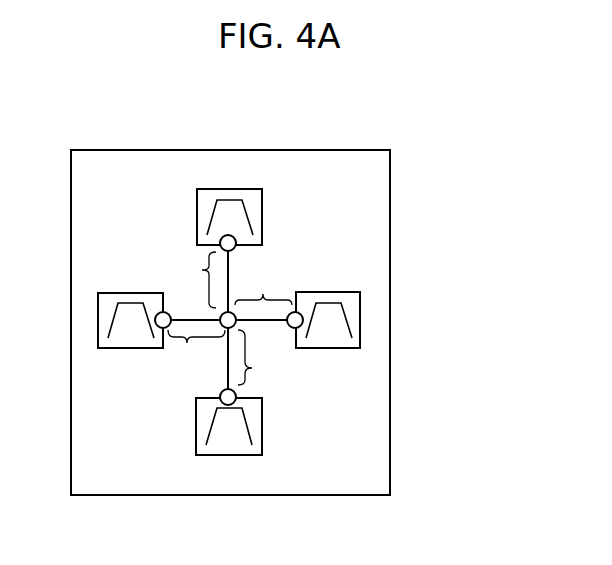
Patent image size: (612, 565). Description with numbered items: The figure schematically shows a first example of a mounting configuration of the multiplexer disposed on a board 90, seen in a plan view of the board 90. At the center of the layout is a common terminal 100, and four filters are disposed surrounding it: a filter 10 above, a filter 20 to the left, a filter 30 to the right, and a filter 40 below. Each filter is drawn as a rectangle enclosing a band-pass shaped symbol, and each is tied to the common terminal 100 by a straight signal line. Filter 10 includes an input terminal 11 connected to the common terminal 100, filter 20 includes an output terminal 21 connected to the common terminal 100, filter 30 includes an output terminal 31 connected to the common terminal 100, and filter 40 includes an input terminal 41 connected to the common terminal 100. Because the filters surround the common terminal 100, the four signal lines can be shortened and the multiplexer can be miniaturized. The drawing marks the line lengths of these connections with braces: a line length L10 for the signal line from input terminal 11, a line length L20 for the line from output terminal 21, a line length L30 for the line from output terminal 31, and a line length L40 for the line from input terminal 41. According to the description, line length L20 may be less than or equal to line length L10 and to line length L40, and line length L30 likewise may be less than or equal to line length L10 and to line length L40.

The board 90 is at (363, 150).
The common terminal 100 is at (231, 312).
The filter 10 is at (263, 202).
The input terminal 11 is at (237, 249).
The filter 20 is at (110, 292).
The output terminal 21 is at (182, 308).
The filter 30 is at (323, 292).
The output terminal 31 is at (220, 393).
The filter 40 is at (232, 456).
The input terminal 41 is at (289, 326).
The line length L10 is at (187, 279).
The line length L20 is at (196, 352).
The line length L30 is at (263, 286).
The line length L40 is at (266, 361).